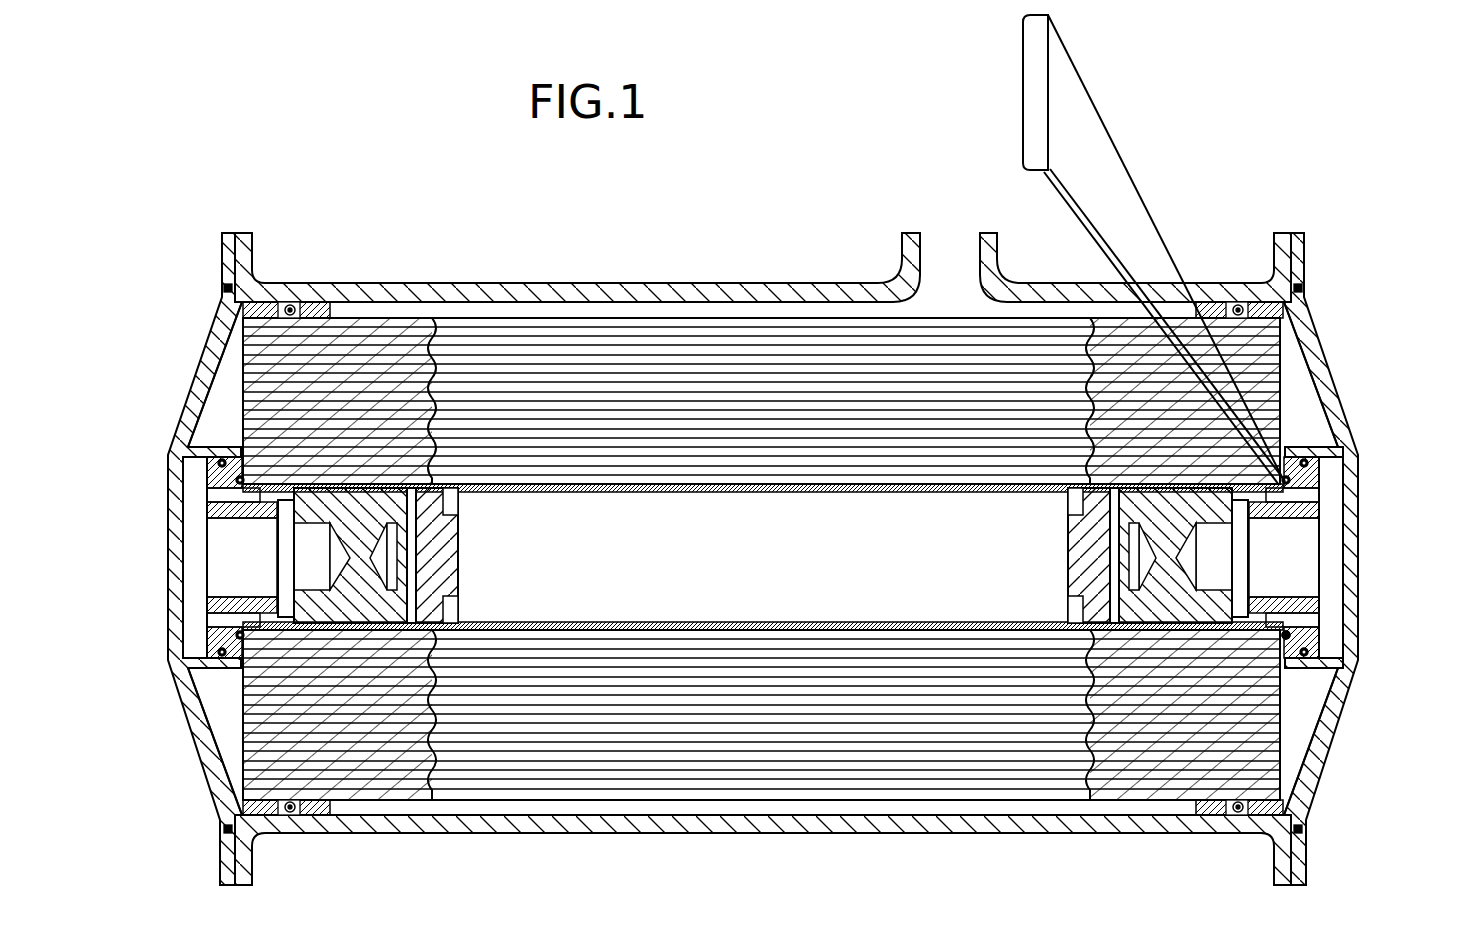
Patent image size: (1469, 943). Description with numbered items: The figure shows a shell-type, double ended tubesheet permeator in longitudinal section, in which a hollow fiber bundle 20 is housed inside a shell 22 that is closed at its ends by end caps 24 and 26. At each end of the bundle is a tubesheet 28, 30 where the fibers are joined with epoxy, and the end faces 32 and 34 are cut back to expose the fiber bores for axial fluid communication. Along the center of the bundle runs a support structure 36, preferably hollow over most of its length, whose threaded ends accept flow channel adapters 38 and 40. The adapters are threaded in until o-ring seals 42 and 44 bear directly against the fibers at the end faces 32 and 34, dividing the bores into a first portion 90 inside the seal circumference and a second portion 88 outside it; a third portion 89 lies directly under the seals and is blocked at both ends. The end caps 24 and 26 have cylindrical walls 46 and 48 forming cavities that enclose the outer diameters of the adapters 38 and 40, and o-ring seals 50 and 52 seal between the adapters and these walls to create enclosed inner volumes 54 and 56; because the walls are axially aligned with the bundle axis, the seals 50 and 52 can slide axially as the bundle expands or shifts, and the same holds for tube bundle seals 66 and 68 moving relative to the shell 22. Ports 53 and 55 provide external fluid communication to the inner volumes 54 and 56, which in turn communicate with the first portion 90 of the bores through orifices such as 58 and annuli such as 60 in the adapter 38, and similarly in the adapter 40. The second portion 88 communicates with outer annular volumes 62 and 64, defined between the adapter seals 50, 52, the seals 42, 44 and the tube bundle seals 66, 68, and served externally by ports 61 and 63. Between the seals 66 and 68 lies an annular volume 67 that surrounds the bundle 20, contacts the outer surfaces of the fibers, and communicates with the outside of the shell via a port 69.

The hollow fiber bundle 20 is at (500, 312).
The shell 22 is at (845, 288).
The end cap 24 is at (1300, 300).
The end cap 26 is at (216, 318).
The tubesheet 28 is at (1120, 330).
The tubesheet 30 is at (372, 310).
The end face 32 is at (1278, 765).
The end face 34 is at (240, 740).
The support structure 36 is at (780, 618).
The flow channel adapter 38 is at (1335, 593).
The flow channel adapter 40 is at (205, 610).
The o-ring seal 42 is at (1345, 663).
The o-ring seal 44 is at (210, 650).
The cylindrical wall 46 is at (1300, 460).
The cylindrical wall 48 is at (226, 445).
The o-ring seal 50 is at (1343, 490).
The o-ring seal 52 is at (207, 462).
The port 53 is at (1360, 510).
The enclosed inner volume 54 is at (1345, 540).
The port 55 is at (176, 488).
The enclosed inner volume 56 is at (193, 535).
The orifice 58 is at (1347, 620).
The annulus 60 is at (1337, 640).
The port 61 is at (1330, 715).
The outer annular volume 62 is at (1298, 382).
The port 63 is at (190, 712).
The outer annular volume 64 is at (228, 392).
The tube bundle seal 66 is at (1240, 305).
The annular volume 67 is at (625, 305).
The tube bundle seal 68 is at (292, 306).
The port 69 is at (945, 232).
The second portion of hollow fiber bores 88 is at (1023, 78).
The third portion of hollow fiber bores 89 is at (1047, 173).
The first portion of hollow fiber bores 90 is at (1050, 180).